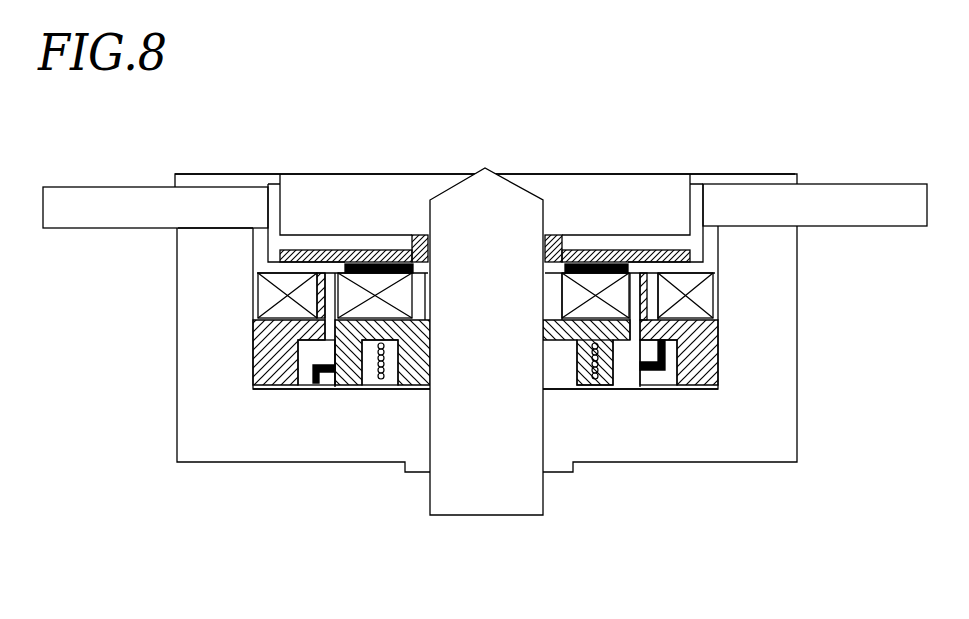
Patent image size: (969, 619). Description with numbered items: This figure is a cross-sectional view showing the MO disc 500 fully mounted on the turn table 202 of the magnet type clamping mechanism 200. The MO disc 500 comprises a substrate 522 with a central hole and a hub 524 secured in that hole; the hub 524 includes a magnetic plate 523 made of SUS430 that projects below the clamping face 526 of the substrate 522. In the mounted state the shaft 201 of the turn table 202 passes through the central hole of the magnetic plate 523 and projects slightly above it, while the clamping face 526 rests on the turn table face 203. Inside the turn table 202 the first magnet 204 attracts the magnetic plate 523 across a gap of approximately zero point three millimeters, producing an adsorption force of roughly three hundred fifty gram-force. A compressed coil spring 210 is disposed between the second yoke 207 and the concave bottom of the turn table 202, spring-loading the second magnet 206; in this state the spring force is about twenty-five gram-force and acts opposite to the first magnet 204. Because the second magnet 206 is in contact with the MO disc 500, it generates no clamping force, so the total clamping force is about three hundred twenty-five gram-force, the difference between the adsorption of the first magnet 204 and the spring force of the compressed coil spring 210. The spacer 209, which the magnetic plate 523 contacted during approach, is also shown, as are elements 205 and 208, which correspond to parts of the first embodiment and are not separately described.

The magnet type clamping mechanism 200 is at (412, 516).
The shaft 201 is at (503, 225).
The turn table 202 is at (777, 318).
The turn table face 203 is at (760, 222).
The first magnet 204 is at (703, 290).
The bearing holder 205 is at (703, 353).
The second magnet 206 is at (612, 268).
The second yoke 207 is at (552, 358).
The engaging recess 208 is at (648, 368).
The spacer 209 is at (586, 258).
The compressed coil spring 210 is at (372, 368).
The MO disc 500 is at (117, 153).
The substrate 522 is at (77, 203).
The magnetic plate 523 is at (355, 258).
The hub 524 is at (277, 210).
The clamping face 526 is at (202, 228).